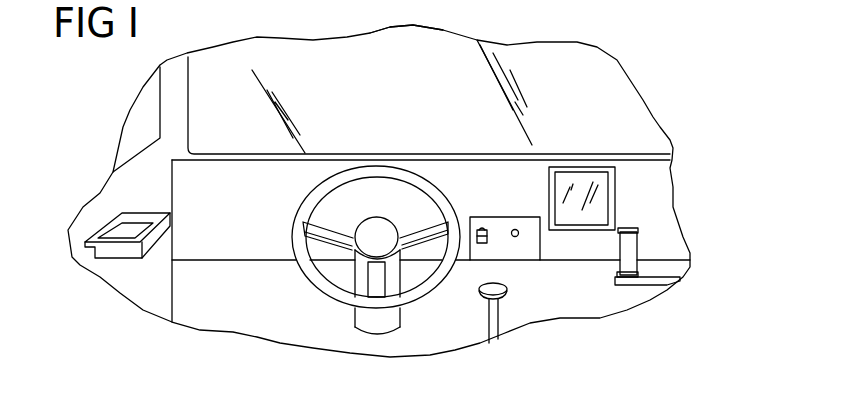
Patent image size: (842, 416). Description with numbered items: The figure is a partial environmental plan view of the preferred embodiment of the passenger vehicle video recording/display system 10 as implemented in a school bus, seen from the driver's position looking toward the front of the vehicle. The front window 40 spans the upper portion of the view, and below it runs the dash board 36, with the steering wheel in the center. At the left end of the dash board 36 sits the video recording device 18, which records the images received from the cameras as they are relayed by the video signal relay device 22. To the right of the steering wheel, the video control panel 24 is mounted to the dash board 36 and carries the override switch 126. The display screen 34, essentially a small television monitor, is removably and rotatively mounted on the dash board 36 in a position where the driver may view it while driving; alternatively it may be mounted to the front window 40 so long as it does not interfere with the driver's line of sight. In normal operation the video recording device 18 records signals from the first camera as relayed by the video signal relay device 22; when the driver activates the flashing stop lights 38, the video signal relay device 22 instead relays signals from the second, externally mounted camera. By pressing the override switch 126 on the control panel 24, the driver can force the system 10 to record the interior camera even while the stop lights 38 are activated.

The passenger vehicle video recording/display system 10 is at (660, 72).
The video recording device 18 is at (96, 251).
The video signal relay device 22 is at (92, 224).
The video control panel 24 is at (523, 260).
The display screen 34 is at (630, 185).
The dash board 36 is at (585, 250).
The stop lights 38 is at (333, 147).
The front window 40 is at (440, 65).
The override switch 126 is at (484, 229).